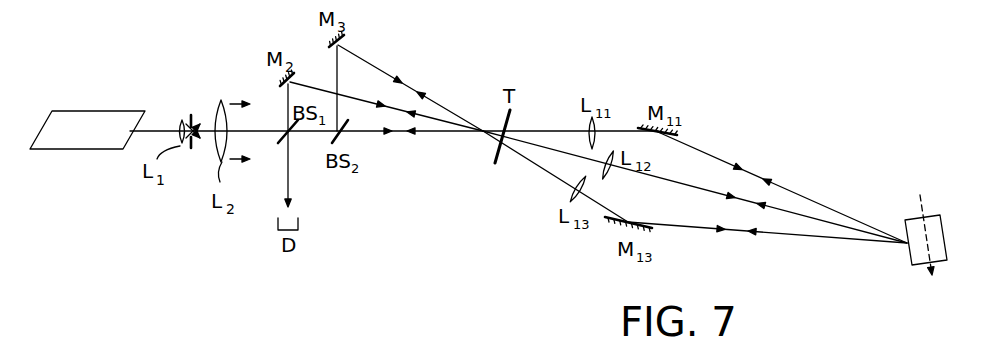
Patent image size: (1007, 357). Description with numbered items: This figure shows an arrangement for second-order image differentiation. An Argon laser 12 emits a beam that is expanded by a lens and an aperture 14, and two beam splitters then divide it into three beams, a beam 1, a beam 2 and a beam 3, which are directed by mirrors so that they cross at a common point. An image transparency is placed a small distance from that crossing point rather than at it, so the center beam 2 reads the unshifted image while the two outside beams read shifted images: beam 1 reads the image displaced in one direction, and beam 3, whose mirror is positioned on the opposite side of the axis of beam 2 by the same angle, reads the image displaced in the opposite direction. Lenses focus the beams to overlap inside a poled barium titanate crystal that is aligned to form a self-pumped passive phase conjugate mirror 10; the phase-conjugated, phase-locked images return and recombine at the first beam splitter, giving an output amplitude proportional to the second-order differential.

The laser 12 is at (72, 111).
The aperture 14 is at (183, 104).
The beam 1 is at (420, 133).
The beam 2 is at (342, 97).
The beam 3 is at (393, 78).
The passive phase conjugate mirror 10 is at (943, 236).